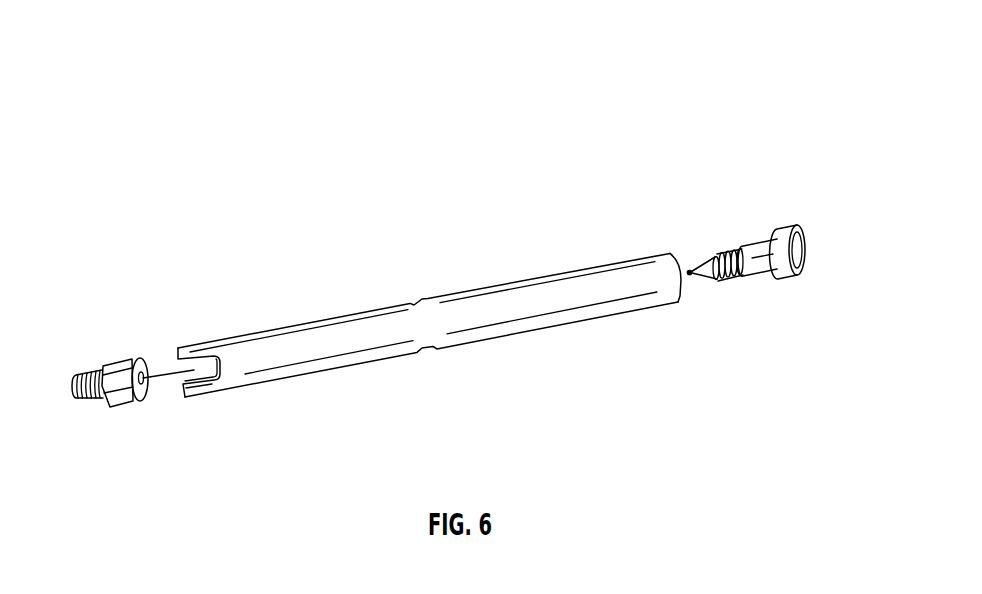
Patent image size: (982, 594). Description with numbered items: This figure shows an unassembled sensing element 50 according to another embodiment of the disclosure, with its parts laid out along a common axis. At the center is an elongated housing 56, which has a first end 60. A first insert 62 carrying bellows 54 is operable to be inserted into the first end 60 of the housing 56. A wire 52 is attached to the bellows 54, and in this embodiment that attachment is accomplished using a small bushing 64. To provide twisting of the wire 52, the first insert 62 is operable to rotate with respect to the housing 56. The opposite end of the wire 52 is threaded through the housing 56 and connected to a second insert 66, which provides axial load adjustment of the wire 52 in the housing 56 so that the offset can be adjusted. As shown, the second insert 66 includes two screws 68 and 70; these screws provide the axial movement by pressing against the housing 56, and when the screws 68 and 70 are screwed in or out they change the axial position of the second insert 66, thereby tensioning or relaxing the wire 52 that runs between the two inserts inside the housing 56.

The sensing element 50 is at (456, 105).
The wire 52 is at (171, 380).
The bellows 54 is at (739, 284).
The housing 56 is at (431, 352).
The first end 60 is at (670, 254).
The first insert 62 is at (788, 231).
The small bushing 64 is at (706, 285).
The second insert 66 is at (143, 349).
The screw 68 is at (90, 374).
The screw 70 is at (93, 401).